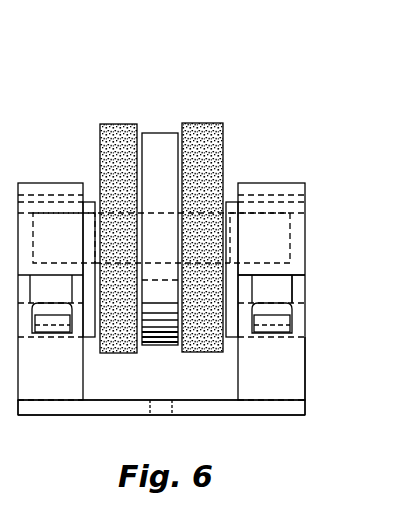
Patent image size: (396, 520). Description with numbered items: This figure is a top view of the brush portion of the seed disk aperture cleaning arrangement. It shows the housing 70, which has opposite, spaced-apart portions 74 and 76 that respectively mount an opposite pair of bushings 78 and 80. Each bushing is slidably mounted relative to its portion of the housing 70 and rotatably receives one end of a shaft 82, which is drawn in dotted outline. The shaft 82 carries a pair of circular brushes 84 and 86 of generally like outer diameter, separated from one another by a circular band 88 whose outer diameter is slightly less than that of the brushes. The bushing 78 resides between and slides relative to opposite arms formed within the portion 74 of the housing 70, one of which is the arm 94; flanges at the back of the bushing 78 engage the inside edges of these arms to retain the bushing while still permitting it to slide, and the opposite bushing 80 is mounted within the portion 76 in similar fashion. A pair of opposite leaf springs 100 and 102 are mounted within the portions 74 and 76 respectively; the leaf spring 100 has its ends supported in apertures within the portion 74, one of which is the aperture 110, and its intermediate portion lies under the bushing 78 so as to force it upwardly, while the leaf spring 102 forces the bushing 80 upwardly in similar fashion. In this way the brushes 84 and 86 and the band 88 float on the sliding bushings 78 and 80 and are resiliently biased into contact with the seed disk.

The housing 70 is at (304, 387).
The spaced-apart portion 74 is at (295, 353).
The spaced-apart portion 76 is at (25, 388).
The bushing 78 is at (232, 202).
The bushing 80 is at (90, 202).
The shaft 82 is at (265, 228).
The circular brush 84 is at (114, 124).
The circular brush 86 is at (207, 123).
The circular band 88 is at (158, 133).
The arm 94 is at (285, 296).
The leaf spring 100 is at (50, 320).
The leaf spring 102 is at (267, 318).
The aperture 110 is at (268, 282).